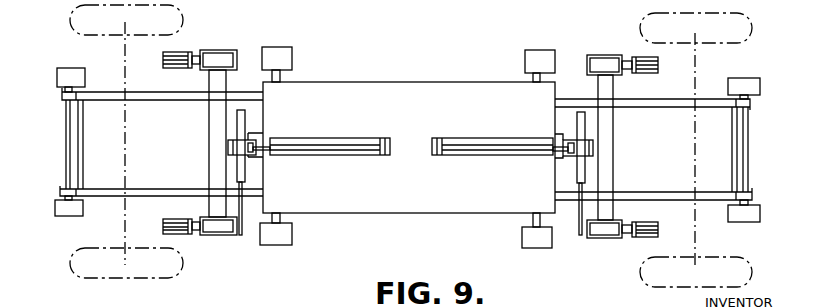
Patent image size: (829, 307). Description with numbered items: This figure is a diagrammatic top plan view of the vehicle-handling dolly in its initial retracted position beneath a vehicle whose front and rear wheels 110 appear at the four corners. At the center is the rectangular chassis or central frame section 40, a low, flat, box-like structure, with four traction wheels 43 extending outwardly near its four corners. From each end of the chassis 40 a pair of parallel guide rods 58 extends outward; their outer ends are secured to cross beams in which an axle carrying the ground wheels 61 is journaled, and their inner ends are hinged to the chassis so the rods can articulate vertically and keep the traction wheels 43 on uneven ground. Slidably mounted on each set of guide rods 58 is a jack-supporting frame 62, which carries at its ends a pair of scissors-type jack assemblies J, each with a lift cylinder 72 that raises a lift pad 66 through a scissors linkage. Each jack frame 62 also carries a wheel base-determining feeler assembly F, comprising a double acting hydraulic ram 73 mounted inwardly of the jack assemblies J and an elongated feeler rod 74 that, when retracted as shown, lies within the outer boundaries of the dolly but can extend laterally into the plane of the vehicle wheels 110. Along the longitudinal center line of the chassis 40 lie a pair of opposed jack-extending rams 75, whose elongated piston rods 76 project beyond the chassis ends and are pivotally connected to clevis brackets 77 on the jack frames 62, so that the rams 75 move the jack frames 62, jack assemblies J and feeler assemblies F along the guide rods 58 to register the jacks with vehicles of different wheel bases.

The chassis or central frame section 40 is at (399, 82).
The traction wheels 43 is at (545, 60).
The guide rods 58 is at (98, 92).
The ground wheels 61 is at (64, 74).
The jack-supporting frame 62 is at (209, 127).
The lift pads 66 is at (220, 60).
The jack or lift cylinders 72 is at (167, 58).
The double acting hydraulic ram 73 is at (245, 170).
The feeler rod 74 is at (244, 230).
The jack-extending rams 75 is at (343, 138).
The piston rod 76 is at (296, 146).
The clevis bracket 77 is at (258, 157).
The front and rear wheels 110 is at (172, 277).
The feeler assembly F is at (252, 130).
The scissors-type jack assemblies J is at (202, 47).